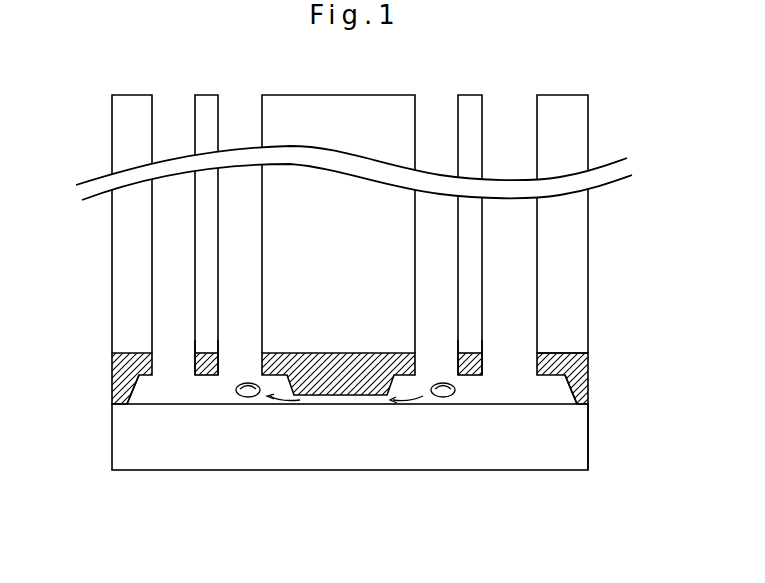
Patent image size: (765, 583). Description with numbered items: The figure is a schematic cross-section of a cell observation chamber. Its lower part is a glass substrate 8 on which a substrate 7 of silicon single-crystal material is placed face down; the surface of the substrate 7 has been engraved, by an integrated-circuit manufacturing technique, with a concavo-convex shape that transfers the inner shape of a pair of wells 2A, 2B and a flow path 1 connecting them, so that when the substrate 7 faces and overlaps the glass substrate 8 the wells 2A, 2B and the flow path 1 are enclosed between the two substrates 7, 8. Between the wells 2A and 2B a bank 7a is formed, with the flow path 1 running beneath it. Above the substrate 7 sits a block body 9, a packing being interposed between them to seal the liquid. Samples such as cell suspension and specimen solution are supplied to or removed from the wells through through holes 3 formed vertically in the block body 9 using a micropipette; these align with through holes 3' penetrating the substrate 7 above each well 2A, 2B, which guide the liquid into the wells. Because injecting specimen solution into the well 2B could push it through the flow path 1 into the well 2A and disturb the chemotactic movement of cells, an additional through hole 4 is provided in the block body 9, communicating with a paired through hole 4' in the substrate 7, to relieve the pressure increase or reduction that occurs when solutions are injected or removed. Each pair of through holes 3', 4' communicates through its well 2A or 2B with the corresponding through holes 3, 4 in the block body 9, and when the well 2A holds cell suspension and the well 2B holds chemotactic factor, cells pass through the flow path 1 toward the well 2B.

The flow path 1 is at (342, 400).
The well 2A is at (550, 396).
The well 2B is at (150, 393).
The through hole 3 is at (352, 224).
The through hole 3' is at (348, 334).
The through hole 4 is at (338, 224).
The through hole 4' is at (338, 330).
The substrate 7 is at (590, 360).
The bank 7a is at (343, 353).
The glass substrate 8 is at (580, 432).
The block body 9 is at (572, 350).